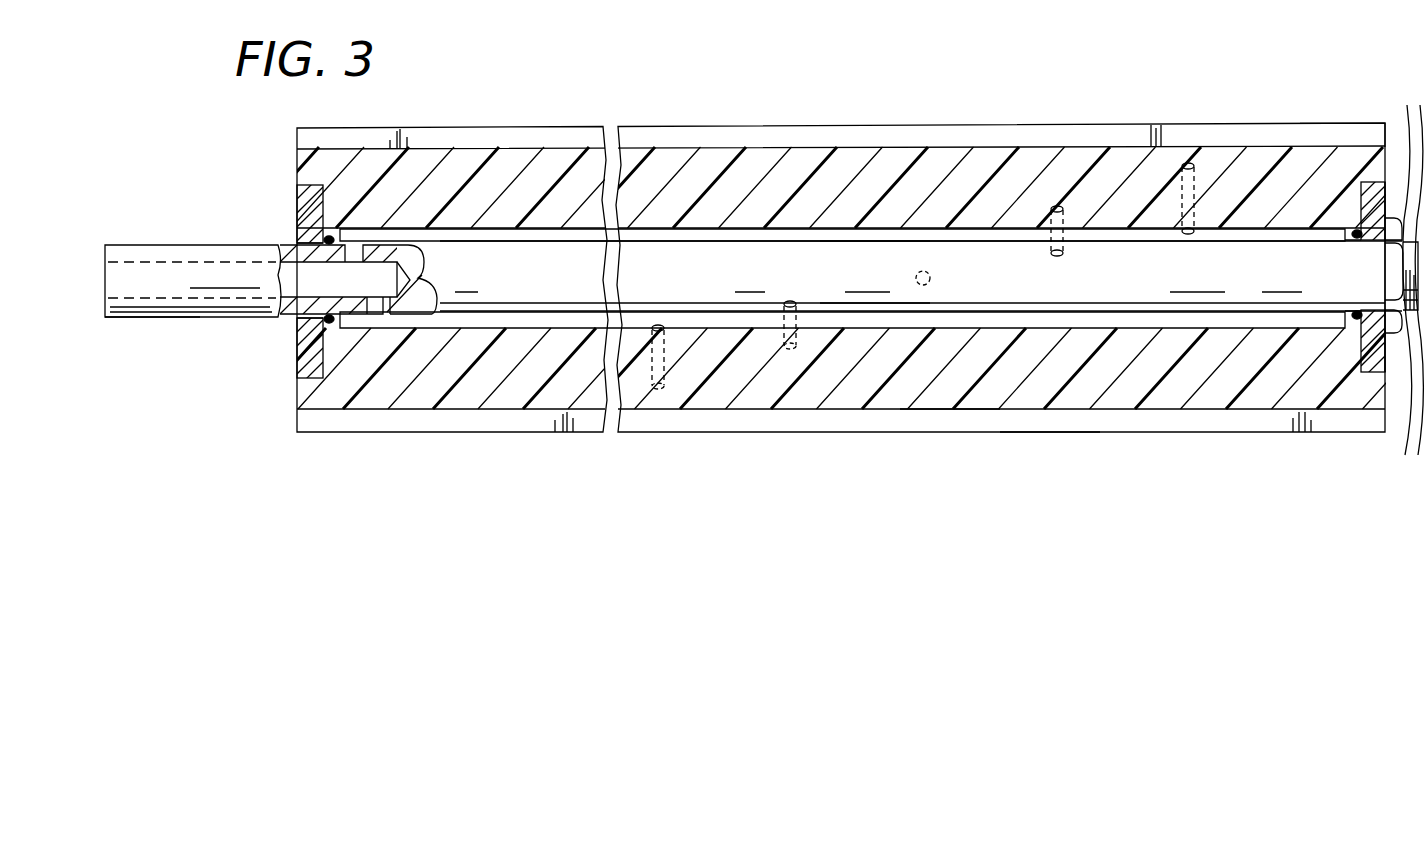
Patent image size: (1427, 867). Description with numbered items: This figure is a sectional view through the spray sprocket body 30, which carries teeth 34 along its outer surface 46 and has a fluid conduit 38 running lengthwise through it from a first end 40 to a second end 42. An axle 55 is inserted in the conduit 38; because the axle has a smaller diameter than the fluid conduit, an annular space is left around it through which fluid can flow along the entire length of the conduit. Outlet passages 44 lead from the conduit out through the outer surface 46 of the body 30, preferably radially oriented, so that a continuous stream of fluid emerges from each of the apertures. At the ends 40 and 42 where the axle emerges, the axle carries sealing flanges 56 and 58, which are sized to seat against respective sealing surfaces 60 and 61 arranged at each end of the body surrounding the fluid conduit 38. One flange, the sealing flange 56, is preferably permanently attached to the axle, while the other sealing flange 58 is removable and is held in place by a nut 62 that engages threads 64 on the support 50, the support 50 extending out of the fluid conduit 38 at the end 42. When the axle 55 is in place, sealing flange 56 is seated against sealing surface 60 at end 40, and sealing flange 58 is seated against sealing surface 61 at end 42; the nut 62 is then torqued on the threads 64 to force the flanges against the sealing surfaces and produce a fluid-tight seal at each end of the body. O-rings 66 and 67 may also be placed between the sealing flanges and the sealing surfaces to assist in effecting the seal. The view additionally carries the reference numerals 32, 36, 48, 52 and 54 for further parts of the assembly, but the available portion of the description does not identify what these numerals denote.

The body 30 is at (737, 410).
The housing wall 32 is at (947, 432).
The teeth 34 is at (1034, 432).
The rod 36 is at (797, 410).
The fluid conduit 38 is at (490, 328).
The end 40 is at (307, 343).
The end 42 is at (1370, 123).
The outlet passages 44 is at (658, 388).
The outer surface 46 is at (790, 350).
The input shaft 48 is at (150, 318).
The support 50 is at (1398, 215).
The shaft 52 is at (212, 270).
The coupling 54 is at (380, 318).
The axle 55 is at (875, 250).
The sealing flange 56 is at (328, 238).
The sealing flange 58 is at (1373, 362).
The sealing surface 60 is at (318, 360).
The sealing surface 61 is at (1360, 348).
The nut 62 is at (1393, 380).
The threads 64 is at (1410, 380).
The O-ring 66 is at (326, 322).
The O-ring 67 is at (1355, 240).